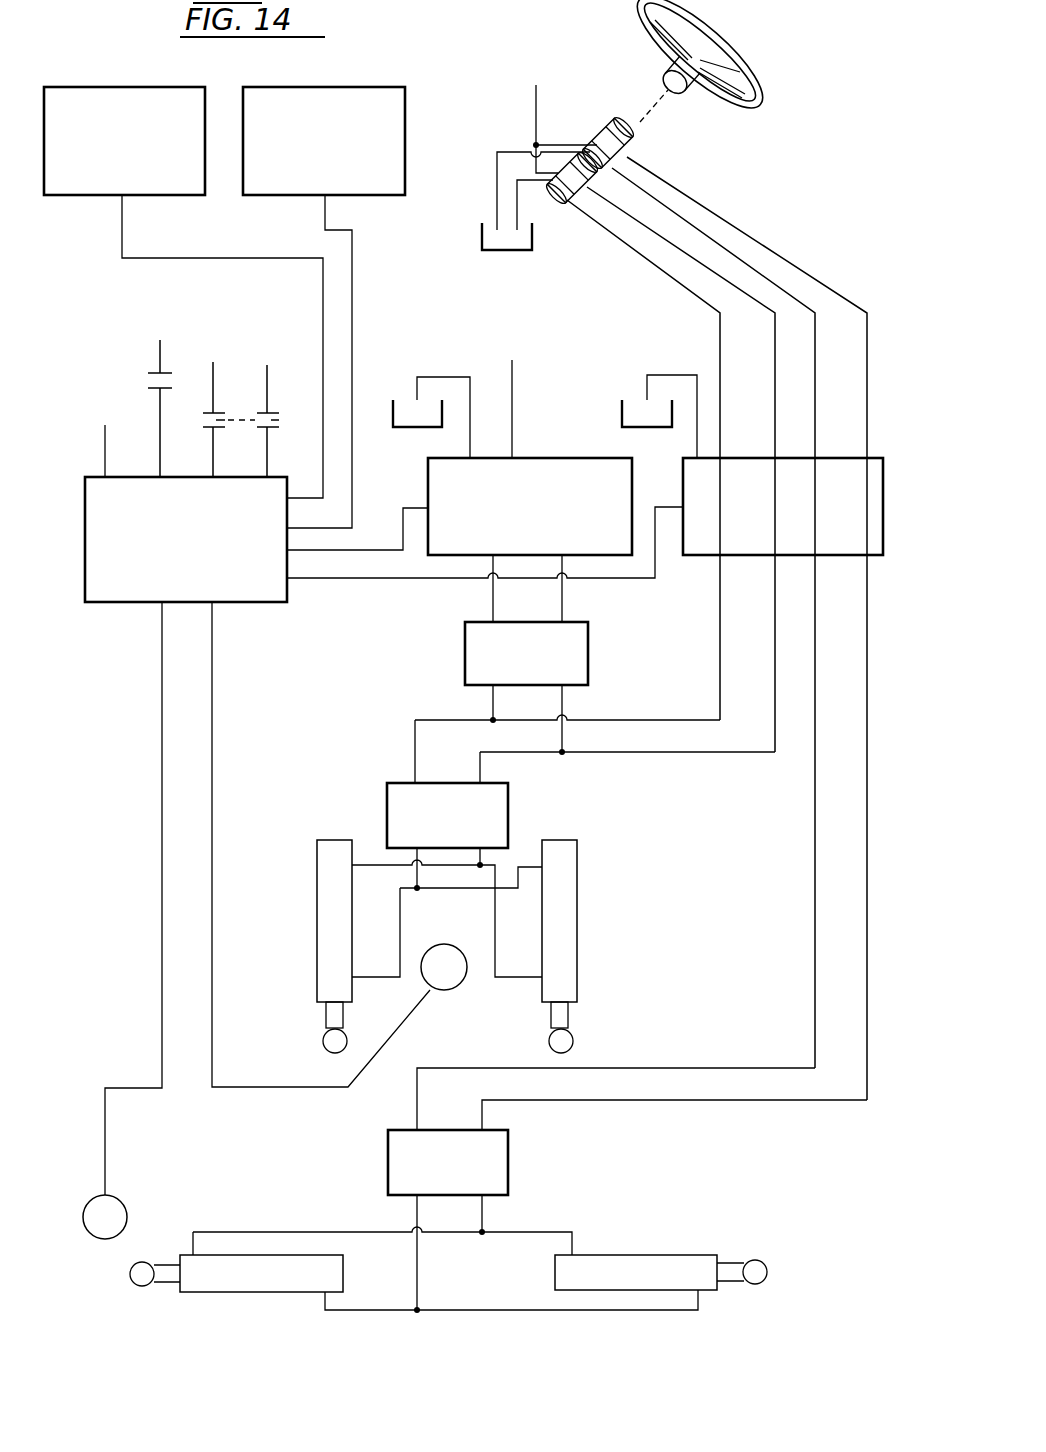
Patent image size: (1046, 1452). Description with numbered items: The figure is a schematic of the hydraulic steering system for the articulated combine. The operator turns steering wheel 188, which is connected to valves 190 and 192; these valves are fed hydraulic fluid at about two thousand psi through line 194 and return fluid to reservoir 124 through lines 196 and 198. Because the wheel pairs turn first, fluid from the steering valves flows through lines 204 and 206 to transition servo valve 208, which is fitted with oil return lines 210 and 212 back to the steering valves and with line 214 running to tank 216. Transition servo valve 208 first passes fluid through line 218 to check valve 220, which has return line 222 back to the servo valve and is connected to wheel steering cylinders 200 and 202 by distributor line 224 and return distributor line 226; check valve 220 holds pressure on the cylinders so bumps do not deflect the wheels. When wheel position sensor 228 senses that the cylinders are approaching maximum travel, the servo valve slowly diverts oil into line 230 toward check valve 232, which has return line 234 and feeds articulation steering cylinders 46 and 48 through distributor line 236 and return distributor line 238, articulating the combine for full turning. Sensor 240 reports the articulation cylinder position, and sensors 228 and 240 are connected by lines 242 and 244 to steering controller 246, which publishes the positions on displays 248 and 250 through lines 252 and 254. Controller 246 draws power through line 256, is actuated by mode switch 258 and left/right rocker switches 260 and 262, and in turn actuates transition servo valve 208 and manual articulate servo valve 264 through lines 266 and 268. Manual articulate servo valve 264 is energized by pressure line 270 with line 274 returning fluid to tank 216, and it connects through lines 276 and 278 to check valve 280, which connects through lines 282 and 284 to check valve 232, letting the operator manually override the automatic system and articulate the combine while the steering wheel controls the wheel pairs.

The steering wheel 188 is at (733, 45).
The valve 190 is at (630, 143).
The valve 192 is at (592, 220).
The line 194 is at (535, 108).
The line 196 is at (497, 158).
The line 198 is at (517, 213).
The reservoir 124 is at (482, 238).
The oil return line 210 is at (692, 205).
The line 204 is at (735, 250).
The line 206 is at (710, 277).
The oil return line 212 is at (665, 273).
The display 248 is at (133, 85).
The display 250 is at (358, 85).
The line 252 is at (122, 228).
The line 254 is at (323, 222).
The line 256 is at (105, 440).
The switch 258 is at (160, 350).
The switch 260 is at (225, 330).
The switch 262 is at (267, 365).
The steering controller 246 is at (127, 602).
The line 268 is at (420, 507).
The line 266 is at (380, 580).
The manual articulate servo valve 264 is at (532, 458).
The line 274 is at (445, 377).
The tank 216 is at (420, 428).
The line 270 is at (512, 380).
The line 214 is at (680, 375).
The transition servo valve 208 is at (683, 458).
The line 276 is at (493, 596).
The line 278 is at (562, 597).
The check valve 280 is at (465, 655).
The return line 234 is at (720, 645).
The line 284 is at (493, 698).
The line 282 is at (562, 700).
The line 230 is at (643, 752).
The check valve 232 is at (508, 795).
The distributor line 236 is at (372, 865).
The return distributor line 238 is at (518, 865).
The articulation steering cylinder 46 is at (317, 900).
The articulation steering cylinder 48 is at (577, 912).
The sensor 240 is at (447, 990).
The line 244 is at (212, 680).
The line 242 is at (162, 730).
The return line 222 is at (815, 1000).
The line 218 is at (832, 1100).
The check valve 220 is at (508, 1150).
The wheel position sensor 228 is at (120, 1200).
The distributor line 224 is at (482, 1210).
The return distributor line 226 is at (417, 1273).
The steering cylinder 200 is at (270, 1292).
The steering cylinder 202 is at (637, 1255).